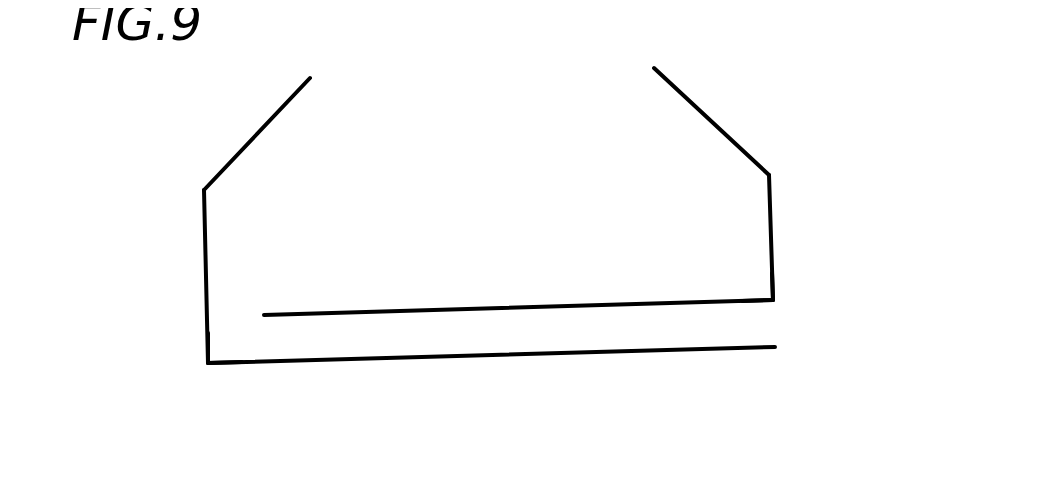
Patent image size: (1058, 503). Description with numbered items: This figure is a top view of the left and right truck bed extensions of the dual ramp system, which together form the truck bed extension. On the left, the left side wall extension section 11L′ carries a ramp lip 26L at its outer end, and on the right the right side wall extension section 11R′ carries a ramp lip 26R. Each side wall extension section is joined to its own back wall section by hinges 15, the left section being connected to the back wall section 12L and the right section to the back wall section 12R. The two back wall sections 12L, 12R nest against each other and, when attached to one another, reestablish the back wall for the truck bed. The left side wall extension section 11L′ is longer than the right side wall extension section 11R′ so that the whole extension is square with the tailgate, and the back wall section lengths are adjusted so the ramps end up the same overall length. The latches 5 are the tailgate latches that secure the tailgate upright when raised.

The ramp lip 26L is at (248, 132).
The ramp lip 26R is at (693, 97).
The left side wall extension section 11L′ is at (205, 278).
The right side wall extension section 11R′ is at (771, 244).
The back wall section 12R is at (408, 309).
The back wall section 12L is at (588, 350).
The hinges 15 is at (775, 298).
The latches 5 is at (205, 361).